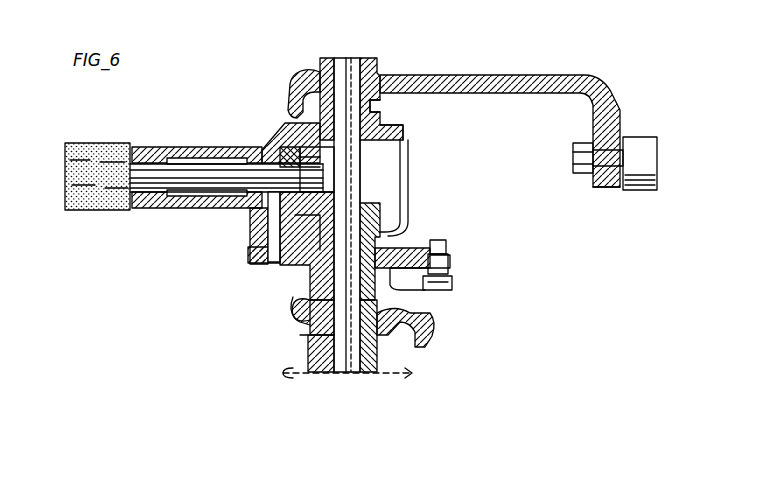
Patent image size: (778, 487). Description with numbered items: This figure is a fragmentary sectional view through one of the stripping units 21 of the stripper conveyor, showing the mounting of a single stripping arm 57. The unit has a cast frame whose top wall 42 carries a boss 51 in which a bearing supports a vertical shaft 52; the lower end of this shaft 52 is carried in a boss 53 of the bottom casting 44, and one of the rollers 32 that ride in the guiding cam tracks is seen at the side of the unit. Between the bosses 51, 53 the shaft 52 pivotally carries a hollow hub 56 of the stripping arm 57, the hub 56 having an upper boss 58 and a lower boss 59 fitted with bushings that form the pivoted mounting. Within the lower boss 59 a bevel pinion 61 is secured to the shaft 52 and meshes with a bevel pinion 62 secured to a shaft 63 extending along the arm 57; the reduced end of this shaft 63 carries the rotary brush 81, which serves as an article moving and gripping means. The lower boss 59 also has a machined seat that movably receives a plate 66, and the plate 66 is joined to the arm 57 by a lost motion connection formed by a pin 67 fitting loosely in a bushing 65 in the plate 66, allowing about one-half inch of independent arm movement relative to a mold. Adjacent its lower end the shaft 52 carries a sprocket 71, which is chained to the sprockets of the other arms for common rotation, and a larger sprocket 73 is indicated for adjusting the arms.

The stripping unit 21 is at (566, 73).
The roller 32 is at (657, 160).
The top wall 42 is at (470, 75).
The bottom casting 44 is at (300, 324).
The boss 51 is at (383, 70).
The vertical shaft 52 is at (347, 62).
The boss 53 is at (415, 338).
The hollow hub 56 is at (403, 128).
The stripping arm 57 is at (196, 206).
The upper boss 58 is at (380, 106).
The lower boss 59 is at (420, 256).
The bevel pinion 61 is at (362, 205).
The bevel pinion 62 is at (325, 162).
The shaft 63 is at (210, 163).
The bushing 65 is at (248, 258).
The plate 66 is at (292, 278).
The pin 67 is at (264, 268).
The sprocket 71 is at (306, 352).
The larger sprocket 73 is at (283, 378).
The rotary brush 81 is at (104, 143).